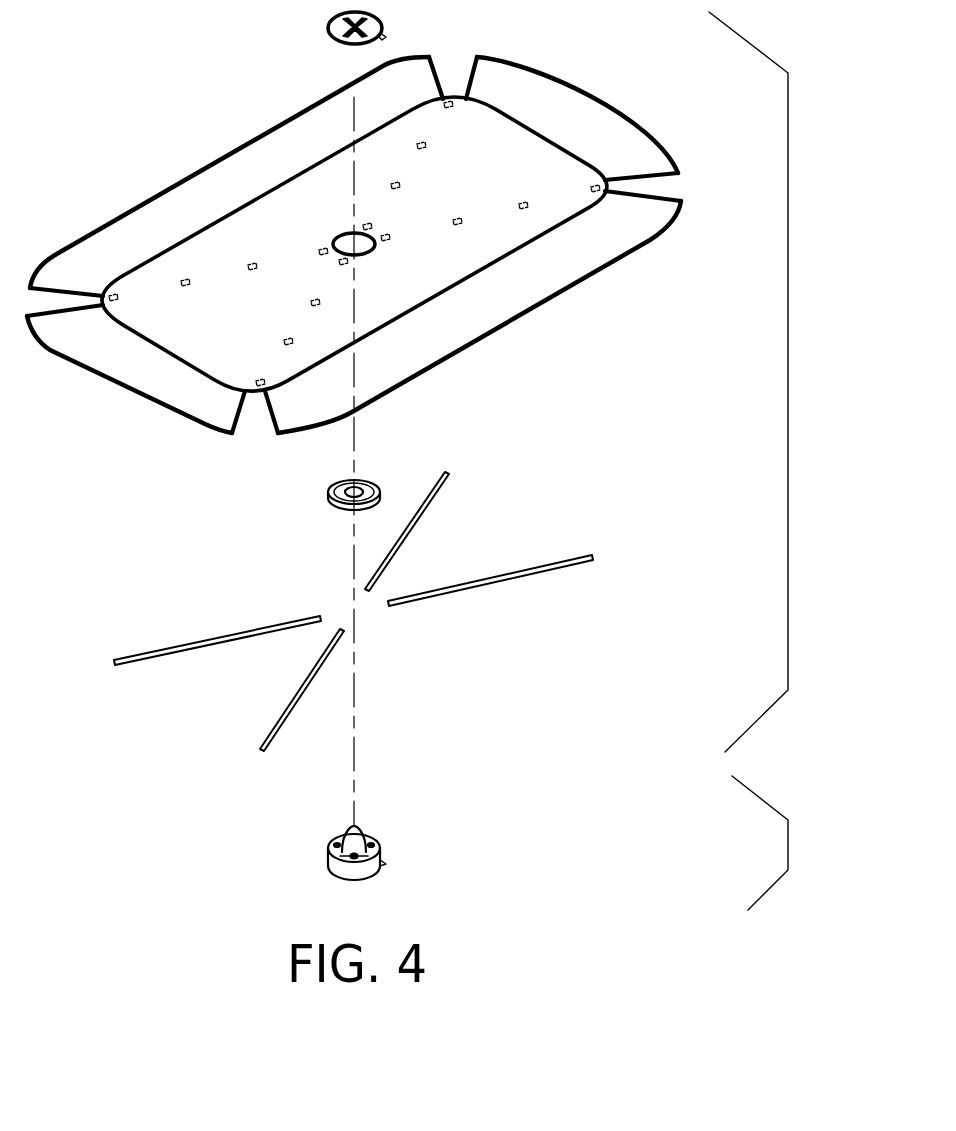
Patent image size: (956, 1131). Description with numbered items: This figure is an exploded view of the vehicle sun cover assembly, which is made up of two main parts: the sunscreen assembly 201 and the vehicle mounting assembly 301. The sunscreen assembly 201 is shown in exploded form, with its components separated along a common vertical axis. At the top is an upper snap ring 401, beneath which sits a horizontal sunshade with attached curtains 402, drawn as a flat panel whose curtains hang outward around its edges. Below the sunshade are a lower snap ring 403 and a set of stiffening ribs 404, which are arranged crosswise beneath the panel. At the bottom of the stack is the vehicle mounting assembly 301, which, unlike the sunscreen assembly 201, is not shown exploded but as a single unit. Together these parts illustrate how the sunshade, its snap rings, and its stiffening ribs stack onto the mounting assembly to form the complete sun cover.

The upper snap ring 401 is at (320, 32).
The horizontal sunshade with attached curtains 402 is at (210, 150).
The lower snap ring 403 is at (315, 496).
The stiffening ribs 404 is at (453, 557).
The sunscreen assembly 201 is at (774, 382).
The vehicle mounting assembly 301 is at (785, 843).